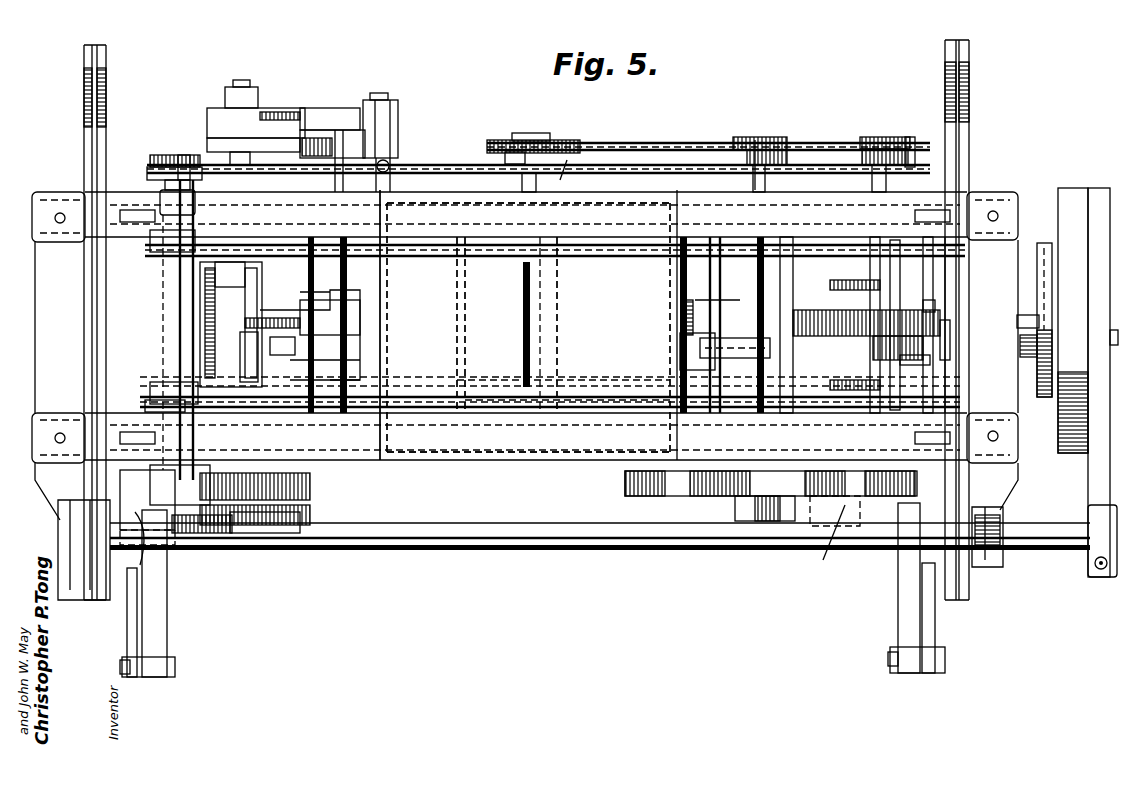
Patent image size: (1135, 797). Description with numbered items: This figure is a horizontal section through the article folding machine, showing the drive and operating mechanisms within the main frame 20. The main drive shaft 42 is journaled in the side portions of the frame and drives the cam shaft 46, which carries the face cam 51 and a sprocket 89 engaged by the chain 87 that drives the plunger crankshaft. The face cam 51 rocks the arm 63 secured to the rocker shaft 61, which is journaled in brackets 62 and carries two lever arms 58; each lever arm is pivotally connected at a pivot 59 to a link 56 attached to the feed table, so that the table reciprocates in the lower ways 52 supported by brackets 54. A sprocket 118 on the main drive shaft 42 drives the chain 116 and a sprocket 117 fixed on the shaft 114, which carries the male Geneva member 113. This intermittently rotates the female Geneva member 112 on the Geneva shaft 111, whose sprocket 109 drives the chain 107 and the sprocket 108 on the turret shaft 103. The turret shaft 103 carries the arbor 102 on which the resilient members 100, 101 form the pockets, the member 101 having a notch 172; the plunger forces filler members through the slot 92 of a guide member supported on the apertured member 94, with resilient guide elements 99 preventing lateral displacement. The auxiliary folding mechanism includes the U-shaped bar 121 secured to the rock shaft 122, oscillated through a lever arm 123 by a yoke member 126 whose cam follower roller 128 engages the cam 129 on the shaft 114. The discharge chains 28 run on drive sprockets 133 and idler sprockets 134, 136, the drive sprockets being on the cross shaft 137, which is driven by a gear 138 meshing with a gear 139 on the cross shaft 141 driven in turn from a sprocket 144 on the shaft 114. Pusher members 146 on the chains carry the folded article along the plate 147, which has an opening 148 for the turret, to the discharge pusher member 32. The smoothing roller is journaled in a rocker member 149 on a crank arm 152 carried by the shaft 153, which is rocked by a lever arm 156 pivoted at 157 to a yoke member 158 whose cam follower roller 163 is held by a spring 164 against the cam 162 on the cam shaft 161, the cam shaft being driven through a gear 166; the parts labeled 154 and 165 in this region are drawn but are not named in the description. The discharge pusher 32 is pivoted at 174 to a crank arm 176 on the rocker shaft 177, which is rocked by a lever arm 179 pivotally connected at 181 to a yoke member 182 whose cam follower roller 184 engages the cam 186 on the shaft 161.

The main frame 20 is at (615, 190).
The discharge chains 28 is at (380, 240).
The discharge pusher member 32 is at (245, 322).
The main drive shaft 42 is at (522, 184).
The cam shaft 46 is at (1017, 320).
The face cam 51 is at (1060, 455).
The lower ways 52 is at (84, 108).
The brackets 54 is at (106, 90).
The links 56 is at (140, 625).
The lever arms 58 is at (167, 650).
The pivot 59 is at (175, 672).
The rocker shaft 61 is at (633, 552).
The brackets 62 is at (60, 490).
The arm 63 is at (1095, 483).
The chain 87 is at (1040, 245).
The sprocket 89 is at (1042, 395).
The slot 92 is at (540, 345).
The apertured member 94 is at (905, 250).
The resilient guide elements 99 is at (525, 270).
The resilient member 100 is at (670, 410).
The resilient member 101 is at (678, 352).
The arbor 102 is at (555, 320).
The turret shaft 103 is at (540, 133).
The chain 107 is at (685, 142).
The sprocket 108 is at (512, 140).
The sprocket 109 is at (785, 137).
The Geneva shaft 111 is at (730, 160).
The female Geneva member 112 is at (625, 483).
The male Geneva member 113 is at (828, 555).
The shaft 114 is at (878, 137).
The chain 116 is at (860, 137).
The sprocket 117 is at (900, 140).
The sprocket 118 is at (487, 145).
The U-shaped bar 121 is at (455, 310).
The rock shaft 122 is at (705, 302).
The lever arm 123 is at (745, 333).
The yoke member 126 is at (825, 310).
The cam follower roller 128 is at (860, 345).
The cam 129 is at (920, 360).
The drive sprockets 133 is at (160, 268).
The idler sprockets 134 is at (805, 258).
The idler sprockets 136 is at (930, 262).
The cross shaft 137 is at (160, 184).
The gear 138 is at (155, 165).
The gear 139 is at (185, 155).
The cross shaft 141 is at (175, 155).
The sprocket 144 is at (905, 160).
The pusher members 146 is at (300, 252).
The plate 147 is at (950, 300).
The opening 148 is at (945, 335).
The rocker member 149 is at (310, 310).
The crank arm 152 is at (360, 330).
The shaft 153 is at (350, 370).
The block 154 is at (248, 290).
The lever arm 156 is at (350, 140).
The pivot 157 is at (385, 95).
The yoke member 158 is at (318, 108).
The cam shaft 161 is at (245, 80).
The cam 162 is at (215, 110).
The cam follower roller 163 is at (285, 108).
The spring 164 is at (388, 165).
The nut 165 is at (295, 350).
The gear 166 is at (310, 490).
The notch 172 is at (735, 310).
The pivot 174 is at (245, 345).
The crank arm 176 is at (232, 375).
The rocker shaft 177 is at (180, 333).
The lever arm 179 is at (178, 560).
The pivot 181 is at (140, 565).
The yoke member 182 is at (200, 540).
The cam follower roller 184 is at (210, 535).
The cam 186 is at (318, 530).